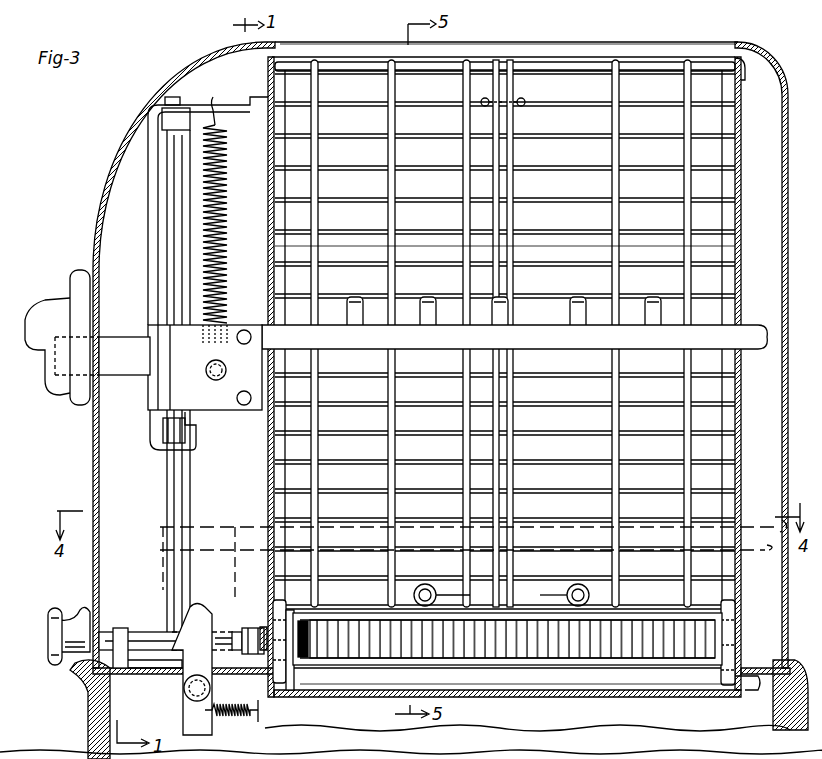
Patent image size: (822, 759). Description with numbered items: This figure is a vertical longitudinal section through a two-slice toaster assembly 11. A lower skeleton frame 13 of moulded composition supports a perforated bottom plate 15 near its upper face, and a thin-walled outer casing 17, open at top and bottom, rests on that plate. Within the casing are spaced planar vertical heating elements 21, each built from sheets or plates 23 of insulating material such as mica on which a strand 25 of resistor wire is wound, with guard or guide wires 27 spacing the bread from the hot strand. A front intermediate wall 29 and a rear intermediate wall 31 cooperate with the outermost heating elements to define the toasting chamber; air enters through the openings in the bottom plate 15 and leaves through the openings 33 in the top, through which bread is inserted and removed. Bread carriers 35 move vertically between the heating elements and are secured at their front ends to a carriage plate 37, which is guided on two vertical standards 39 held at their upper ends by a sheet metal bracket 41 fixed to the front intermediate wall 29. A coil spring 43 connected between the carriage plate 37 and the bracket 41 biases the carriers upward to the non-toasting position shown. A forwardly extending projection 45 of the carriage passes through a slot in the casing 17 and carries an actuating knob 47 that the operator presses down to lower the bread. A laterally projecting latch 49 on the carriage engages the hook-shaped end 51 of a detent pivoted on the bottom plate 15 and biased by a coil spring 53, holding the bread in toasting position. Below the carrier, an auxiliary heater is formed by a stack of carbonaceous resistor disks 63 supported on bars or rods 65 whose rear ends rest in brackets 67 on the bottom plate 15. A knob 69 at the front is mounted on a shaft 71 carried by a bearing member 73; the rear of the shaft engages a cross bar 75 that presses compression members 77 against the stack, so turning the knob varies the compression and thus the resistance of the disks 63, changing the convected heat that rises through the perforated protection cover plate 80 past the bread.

The toaster assembly 11 is at (66, 164).
The lower skeleton frame 13 is at (88, 722).
The bottom plate 15 is at (118, 674).
The outer casing 17 is at (93, 236).
The heating elements 21 is at (652, 159).
The sheets or plates of insulating material 23 is at (268, 283).
The strand of resistor wire 25 is at (567, 196).
The guard or guide wires 27 is at (668, 246).
The front intermediate wall 29 is at (268, 236).
The rear intermediate wall 31 is at (741, 258).
The openings 33 is at (600, 45).
The bread carriers 35 is at (560, 345).
The carriage plate 37 is at (148, 252).
The vertical standards 39 is at (192, 497).
The sheet metal bracket 41 is at (230, 118).
The coil spring 43 is at (228, 176).
The forwardly extending projection 45 is at (118, 332).
The actuating knob 47 is at (60, 318).
The laterally projecting latch 49 is at (198, 448).
The hook-shaped end of detent 51 is at (200, 604).
The coil spring 53 is at (231, 719).
The resistor disks 63 is at (638, 660).
The bars or rods 65 is at (643, 613).
The brackets 67 is at (288, 668).
The knob 69 is at (55, 608).
The shaft 71 is at (140, 632).
The bearing member 73 is at (118, 628).
The cross bar 75 is at (254, 628).
The compression members 77 is at (296, 610).
The perforated protection cover plate 80 is at (530, 690).